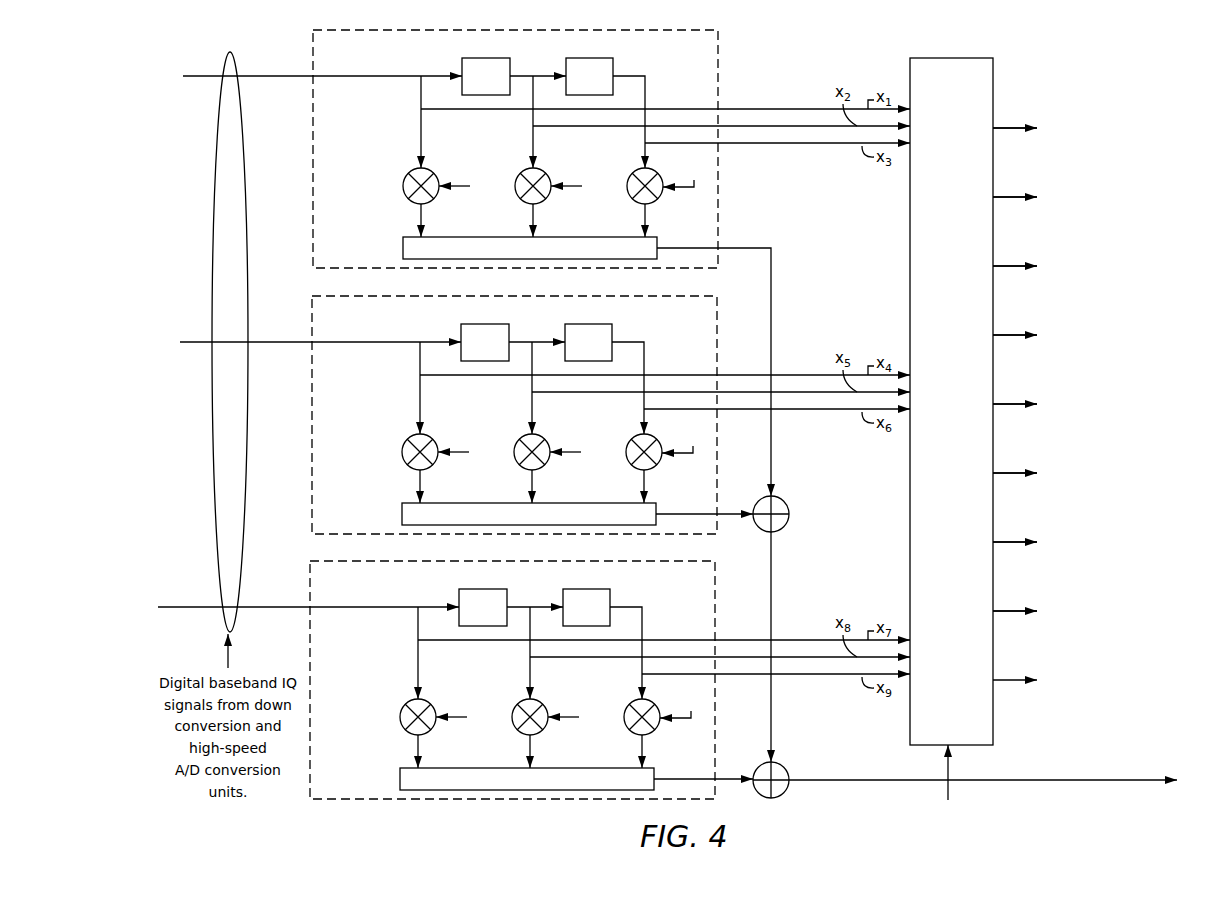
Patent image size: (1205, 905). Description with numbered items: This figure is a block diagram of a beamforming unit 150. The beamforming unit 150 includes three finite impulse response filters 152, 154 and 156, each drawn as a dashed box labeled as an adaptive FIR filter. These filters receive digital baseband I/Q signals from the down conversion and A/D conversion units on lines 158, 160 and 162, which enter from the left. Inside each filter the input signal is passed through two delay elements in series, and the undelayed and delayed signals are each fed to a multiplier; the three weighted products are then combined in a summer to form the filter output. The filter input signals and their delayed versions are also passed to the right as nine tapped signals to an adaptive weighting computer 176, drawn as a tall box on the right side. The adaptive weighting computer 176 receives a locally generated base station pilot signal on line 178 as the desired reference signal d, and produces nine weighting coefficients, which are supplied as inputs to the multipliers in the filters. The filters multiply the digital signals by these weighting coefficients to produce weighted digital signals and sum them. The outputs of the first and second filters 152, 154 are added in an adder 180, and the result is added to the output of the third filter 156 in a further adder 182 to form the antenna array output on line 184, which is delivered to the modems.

The beamforming unit 150 is at (858, 243).
The finite impulse response filter 152 is at (611, 149).
The finite impulse response filter 154 is at (611, 415).
The finite impulse response filter 156 is at (610, 680).
The line 158 is at (277, 78).
The line 160 is at (277, 344).
The line 162 is at (270, 605).
The adaptive weighting computer 176 is at (993, 92).
The line 178 is at (945, 776).
The adder 180 is at (783, 502).
The adder 182 is at (783, 768).
The line 184 is at (1080, 783).